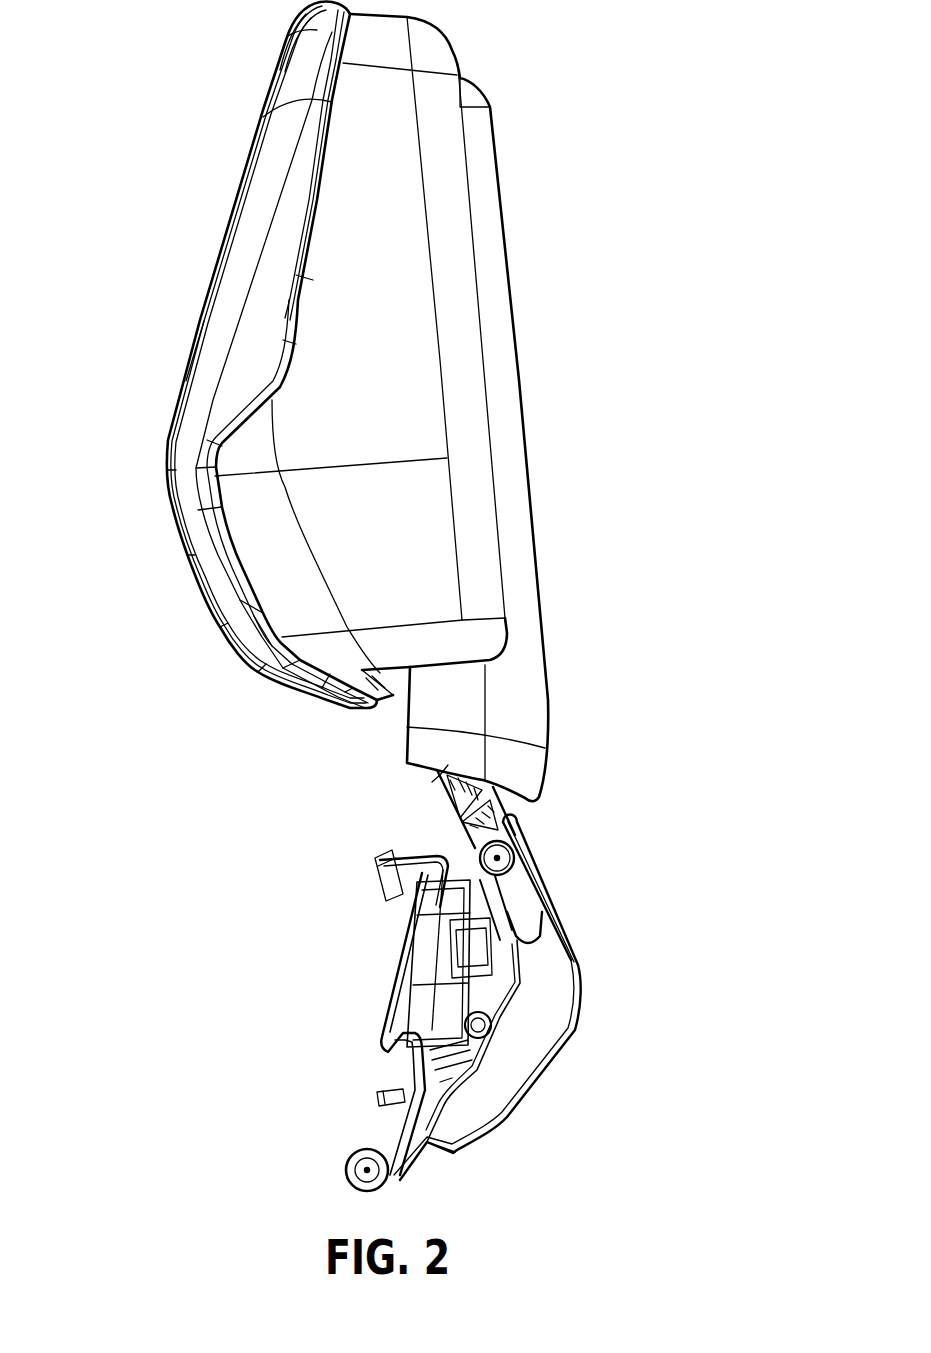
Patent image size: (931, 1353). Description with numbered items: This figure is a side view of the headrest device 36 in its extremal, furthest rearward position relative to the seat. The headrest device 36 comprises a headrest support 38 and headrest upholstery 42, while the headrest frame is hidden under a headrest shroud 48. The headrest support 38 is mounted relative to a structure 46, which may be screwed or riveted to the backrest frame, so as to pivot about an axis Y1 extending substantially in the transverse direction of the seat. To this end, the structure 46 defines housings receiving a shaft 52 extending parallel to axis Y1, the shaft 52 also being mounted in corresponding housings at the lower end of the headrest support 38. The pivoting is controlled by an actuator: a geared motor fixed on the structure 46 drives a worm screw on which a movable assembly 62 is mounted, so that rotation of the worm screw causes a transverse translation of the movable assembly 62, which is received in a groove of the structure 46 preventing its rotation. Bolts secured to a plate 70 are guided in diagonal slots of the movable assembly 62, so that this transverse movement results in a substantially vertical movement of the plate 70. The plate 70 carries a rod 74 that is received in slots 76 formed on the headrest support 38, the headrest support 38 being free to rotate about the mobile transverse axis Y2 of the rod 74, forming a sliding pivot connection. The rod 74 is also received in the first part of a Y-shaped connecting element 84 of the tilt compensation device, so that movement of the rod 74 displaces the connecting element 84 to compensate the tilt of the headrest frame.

The headrest device 36 is at (132, 163).
The headrest upholstery 42 is at (218, 305).
The headrest shroud 48 is at (490, 255).
The headrest support 38 is at (553, 1008).
The structure 46 is at (397, 999).
The shaft 52 is at (357, 1157).
The movable assembly 62 is at (440, 940).
The plate 70 is at (468, 953).
The rod 74 is at (483, 857).
The slots 76 is at (520, 912).
The connecting element 84 is at (468, 808).
The axis Y1 is at (348, 1177).
The axis Y2 is at (502, 855).